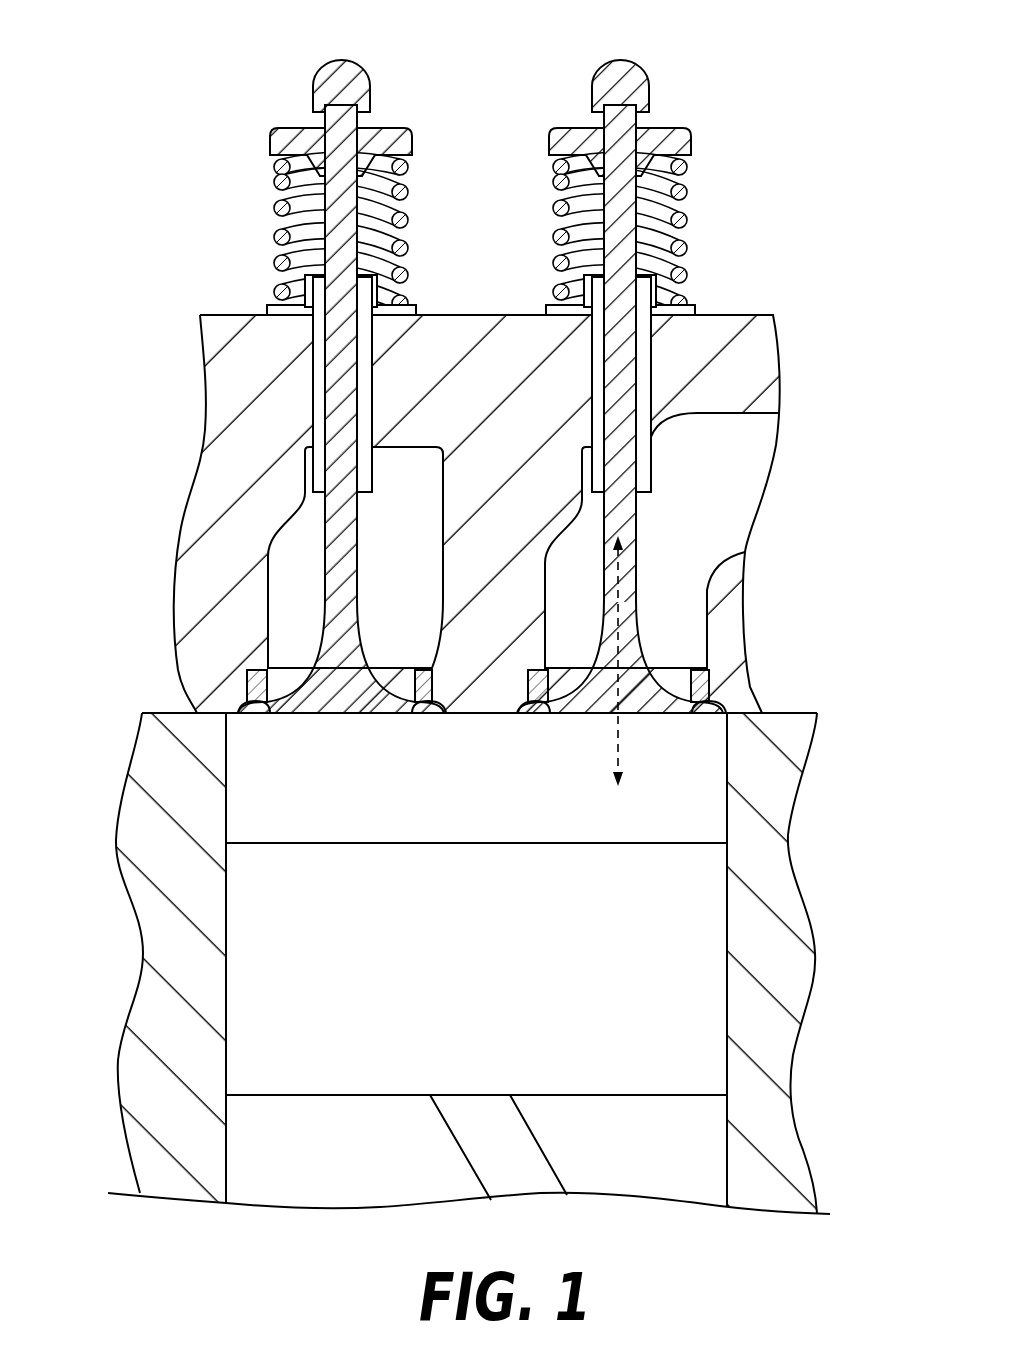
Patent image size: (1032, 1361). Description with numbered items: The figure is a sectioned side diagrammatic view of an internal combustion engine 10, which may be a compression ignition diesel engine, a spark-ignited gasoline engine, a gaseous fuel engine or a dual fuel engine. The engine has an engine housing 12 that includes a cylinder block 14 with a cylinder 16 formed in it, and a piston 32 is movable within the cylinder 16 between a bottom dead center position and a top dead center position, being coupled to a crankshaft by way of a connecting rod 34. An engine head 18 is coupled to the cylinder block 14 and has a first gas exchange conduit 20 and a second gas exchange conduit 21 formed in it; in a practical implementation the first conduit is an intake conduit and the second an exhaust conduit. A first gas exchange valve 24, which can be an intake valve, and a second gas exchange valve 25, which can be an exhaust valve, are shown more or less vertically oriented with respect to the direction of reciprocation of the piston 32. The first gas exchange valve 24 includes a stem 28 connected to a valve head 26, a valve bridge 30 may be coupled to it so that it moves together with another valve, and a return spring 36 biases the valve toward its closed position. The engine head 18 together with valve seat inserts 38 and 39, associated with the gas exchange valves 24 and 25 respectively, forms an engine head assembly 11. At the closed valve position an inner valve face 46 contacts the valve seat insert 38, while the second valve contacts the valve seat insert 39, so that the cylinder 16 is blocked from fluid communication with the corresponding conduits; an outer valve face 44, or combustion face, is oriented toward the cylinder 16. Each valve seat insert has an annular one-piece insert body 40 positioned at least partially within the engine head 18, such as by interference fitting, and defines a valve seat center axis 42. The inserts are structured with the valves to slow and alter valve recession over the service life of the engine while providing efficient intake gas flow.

The internal combustion engine 10 is at (783, 273).
The engine head assembly 11 is at (134, 510).
The engine housing 12 is at (823, 674).
The cylinder block 14 is at (778, 805).
The cylinder 16 is at (491, 827).
The engine head 18 is at (725, 590).
The first gas exchange conduit 20 is at (716, 565).
The second gas exchange conduit 21 is at (270, 598).
The first gas exchange valve 24 is at (620, 409).
The second gas exchange valve 25 is at (347, 541).
The valve head 26 is at (630, 668).
The stem 28 is at (622, 440).
The valve bridge 30 is at (613, 76).
The piston 32 is at (703, 993).
The connecting rod 34 is at (512, 1143).
The return spring 36 is at (688, 190).
The valve seat insert 38 is at (518, 690).
The valve seat insert 39 is at (234, 690).
The insert body 40 is at (545, 665).
The valve seat center axis 42 is at (622, 750).
The outer valve face 44 is at (682, 717).
The inner valve face 46 is at (745, 680).